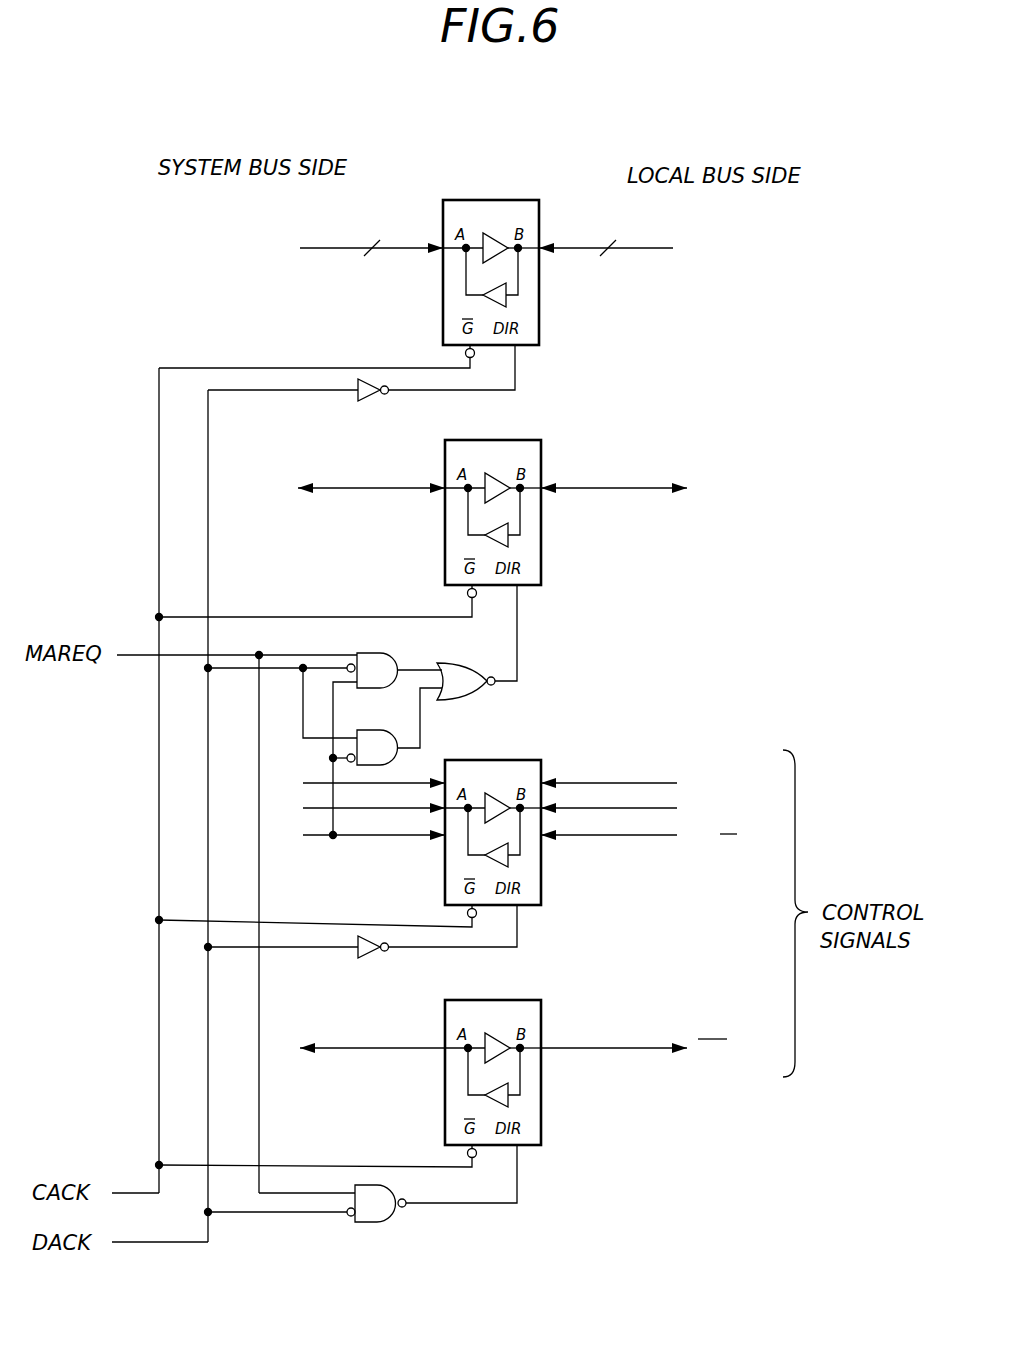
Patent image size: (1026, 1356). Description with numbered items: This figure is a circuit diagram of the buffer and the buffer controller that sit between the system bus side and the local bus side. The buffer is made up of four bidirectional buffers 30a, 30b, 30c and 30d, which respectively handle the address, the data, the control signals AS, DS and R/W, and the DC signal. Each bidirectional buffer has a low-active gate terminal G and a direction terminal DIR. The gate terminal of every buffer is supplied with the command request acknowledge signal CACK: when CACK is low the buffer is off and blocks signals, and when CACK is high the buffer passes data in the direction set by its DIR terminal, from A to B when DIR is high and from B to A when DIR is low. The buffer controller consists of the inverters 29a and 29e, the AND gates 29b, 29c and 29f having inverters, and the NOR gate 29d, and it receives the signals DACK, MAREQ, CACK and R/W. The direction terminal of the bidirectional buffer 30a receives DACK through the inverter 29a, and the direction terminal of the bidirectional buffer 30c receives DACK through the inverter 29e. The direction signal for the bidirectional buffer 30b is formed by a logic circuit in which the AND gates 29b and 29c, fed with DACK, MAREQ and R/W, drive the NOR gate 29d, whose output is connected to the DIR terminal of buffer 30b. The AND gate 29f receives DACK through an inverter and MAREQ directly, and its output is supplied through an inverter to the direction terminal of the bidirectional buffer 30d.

The bidirectional buffer 30a is at (513, 200).
The bidirectional buffer 30b is at (541, 440).
The bidirectional buffer 30c is at (541, 762).
The bidirectional buffer 30d is at (541, 1000).
The inverter 29a is at (369, 402).
The AND gate having inverters 29b is at (399, 661).
The AND gate having inverters 29c is at (398, 763).
The NOR gate 29d is at (492, 686).
The inverter 29e is at (370, 959).
The AND gate having inverters 29f is at (380, 1222).